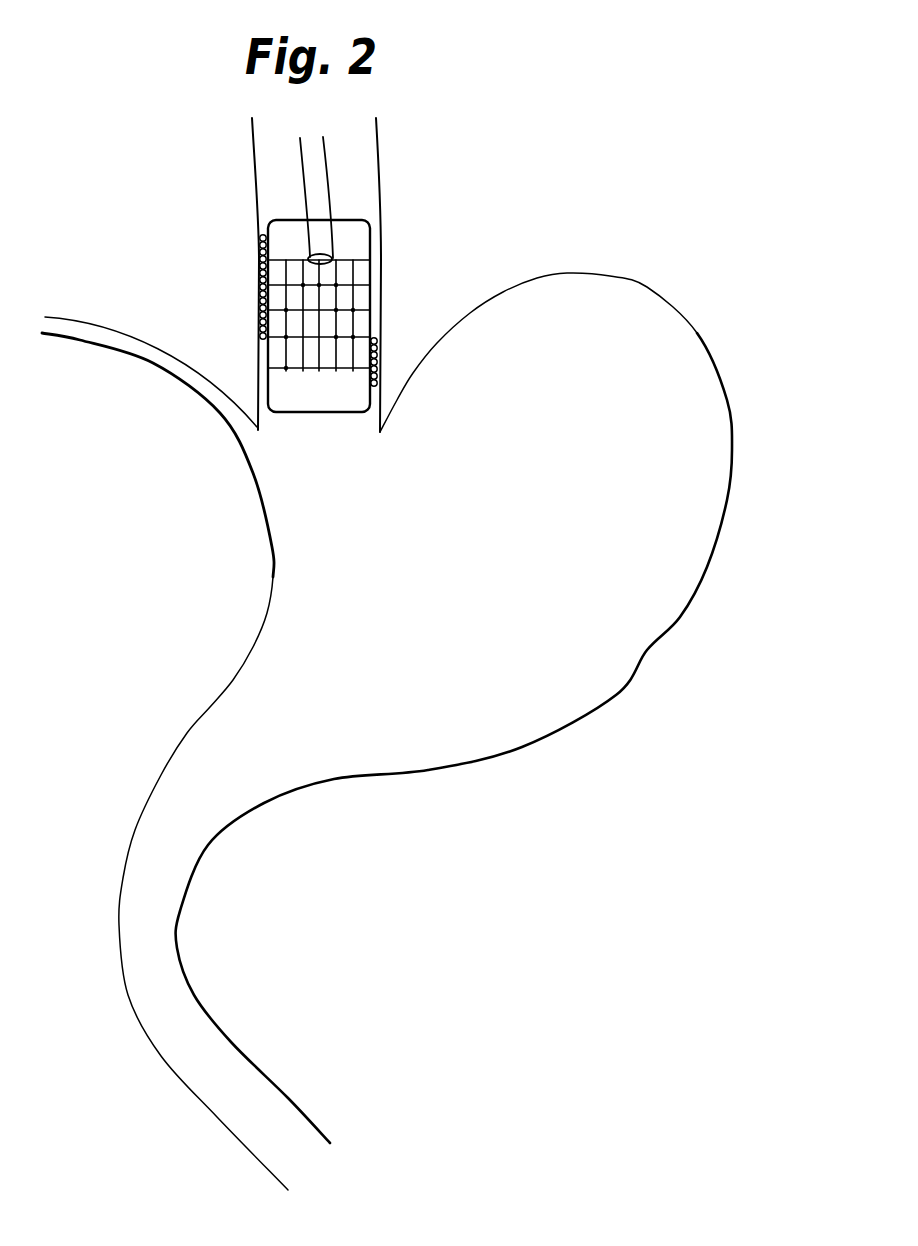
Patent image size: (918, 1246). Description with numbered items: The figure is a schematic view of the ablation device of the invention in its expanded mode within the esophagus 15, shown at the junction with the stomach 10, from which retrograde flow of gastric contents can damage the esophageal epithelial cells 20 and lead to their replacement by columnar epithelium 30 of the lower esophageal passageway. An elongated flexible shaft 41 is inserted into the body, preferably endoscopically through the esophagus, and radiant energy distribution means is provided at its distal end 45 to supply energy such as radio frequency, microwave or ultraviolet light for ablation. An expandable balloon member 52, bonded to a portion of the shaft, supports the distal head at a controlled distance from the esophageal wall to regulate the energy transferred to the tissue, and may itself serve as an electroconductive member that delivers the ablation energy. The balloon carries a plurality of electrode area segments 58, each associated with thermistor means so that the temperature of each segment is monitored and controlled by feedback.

The stomach 10 is at (578, 508).
The esophagus 15 is at (258, 185).
The esophageal epithelial cells 20 is at (260, 262).
The columnar epithelium 30 is at (380, 348).
The elongated flexible shaft 41 is at (330, 160).
The distal end 45 is at (371, 260).
The expandable balloon member 52 is at (355, 218).
The electrode area segments 58 is at (354, 310).